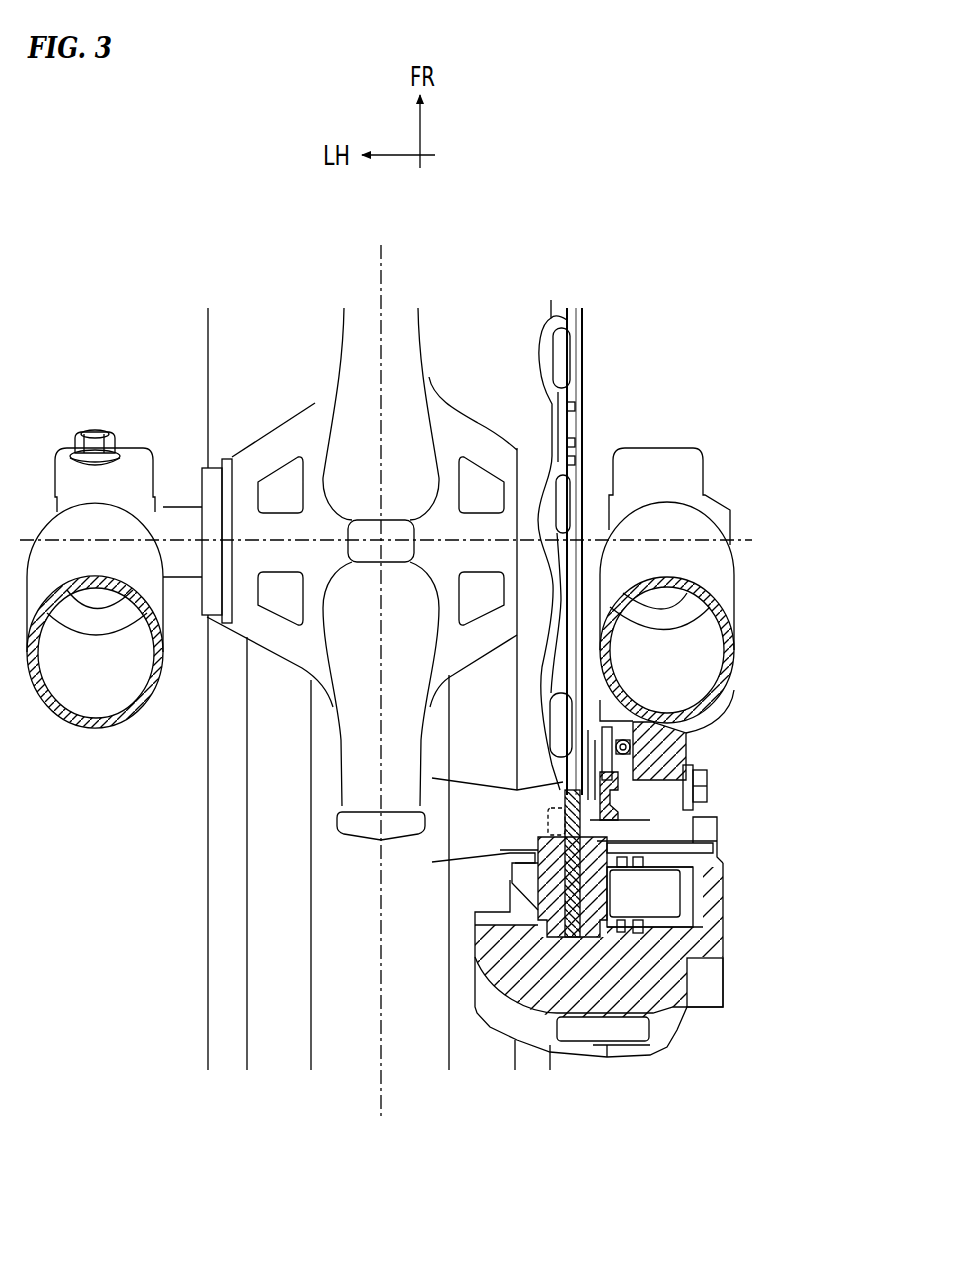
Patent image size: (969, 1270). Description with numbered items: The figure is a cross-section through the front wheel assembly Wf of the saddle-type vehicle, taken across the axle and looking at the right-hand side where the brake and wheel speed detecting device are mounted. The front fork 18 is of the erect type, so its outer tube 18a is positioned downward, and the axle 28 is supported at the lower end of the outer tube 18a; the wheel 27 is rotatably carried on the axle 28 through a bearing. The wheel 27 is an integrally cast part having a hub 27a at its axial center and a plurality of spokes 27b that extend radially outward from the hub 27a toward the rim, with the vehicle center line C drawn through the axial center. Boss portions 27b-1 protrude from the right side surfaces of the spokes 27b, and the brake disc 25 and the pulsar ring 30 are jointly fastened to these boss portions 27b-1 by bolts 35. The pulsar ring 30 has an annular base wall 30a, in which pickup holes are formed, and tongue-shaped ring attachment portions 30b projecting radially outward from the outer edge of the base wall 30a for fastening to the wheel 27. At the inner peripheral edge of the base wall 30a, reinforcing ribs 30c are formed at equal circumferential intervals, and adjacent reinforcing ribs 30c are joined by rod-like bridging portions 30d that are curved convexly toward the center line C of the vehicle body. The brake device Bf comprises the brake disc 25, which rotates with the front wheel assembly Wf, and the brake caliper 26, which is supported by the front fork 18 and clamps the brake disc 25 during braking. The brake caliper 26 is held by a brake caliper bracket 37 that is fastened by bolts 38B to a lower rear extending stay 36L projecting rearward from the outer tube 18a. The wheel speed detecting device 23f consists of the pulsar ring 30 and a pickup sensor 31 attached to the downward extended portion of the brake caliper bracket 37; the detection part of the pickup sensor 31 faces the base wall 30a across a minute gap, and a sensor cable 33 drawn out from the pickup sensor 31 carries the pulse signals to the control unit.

The front fork 18 is at (66, 733).
The outer tube 18a is at (57, 562).
The axle 28 is at (173, 517).
The wheel 27 is at (379, 689).
The hub 27a is at (280, 440).
The spokes 27b is at (372, 528).
The boss portions 27b-1 is at (473, 850).
The pulsar ring 30 is at (587, 369).
The base wall 30a is at (580, 492).
The ring attachment portions 30b is at (567, 780).
The reinforcing ribs 30c is at (566, 432).
The bridging portions 30d is at (553, 527).
The pickup sensor 31 is at (600, 747).
The wheel speed detecting device 23f is at (608, 722).
The sensor cable 33 is at (631, 746).
The bolts 38B is at (708, 787).
The rear extending stay 36L is at (670, 787).
The brake caliper bracket 37 is at (610, 797).
The bolts 35 is at (547, 830).
The brake disc 25 is at (570, 940).
The brake caliper 26 is at (660, 983).
The brake device Bf is at (514, 1008).
The front wheel assembly Wf is at (573, 288).
The center line C is at (381, 1095).